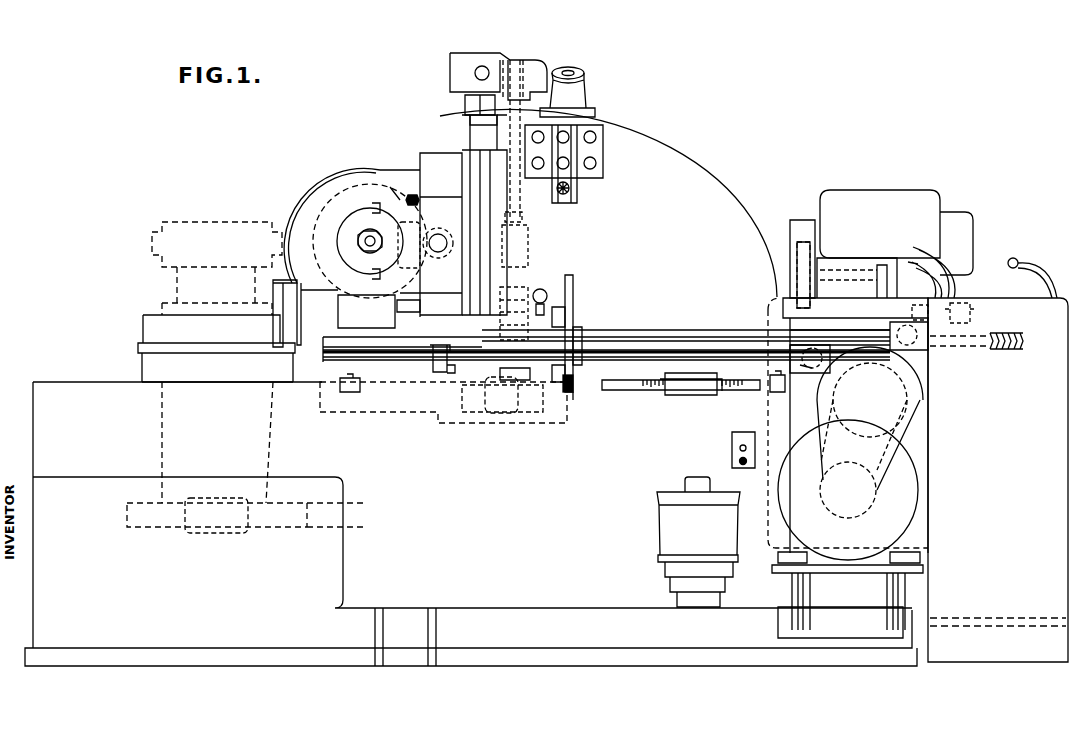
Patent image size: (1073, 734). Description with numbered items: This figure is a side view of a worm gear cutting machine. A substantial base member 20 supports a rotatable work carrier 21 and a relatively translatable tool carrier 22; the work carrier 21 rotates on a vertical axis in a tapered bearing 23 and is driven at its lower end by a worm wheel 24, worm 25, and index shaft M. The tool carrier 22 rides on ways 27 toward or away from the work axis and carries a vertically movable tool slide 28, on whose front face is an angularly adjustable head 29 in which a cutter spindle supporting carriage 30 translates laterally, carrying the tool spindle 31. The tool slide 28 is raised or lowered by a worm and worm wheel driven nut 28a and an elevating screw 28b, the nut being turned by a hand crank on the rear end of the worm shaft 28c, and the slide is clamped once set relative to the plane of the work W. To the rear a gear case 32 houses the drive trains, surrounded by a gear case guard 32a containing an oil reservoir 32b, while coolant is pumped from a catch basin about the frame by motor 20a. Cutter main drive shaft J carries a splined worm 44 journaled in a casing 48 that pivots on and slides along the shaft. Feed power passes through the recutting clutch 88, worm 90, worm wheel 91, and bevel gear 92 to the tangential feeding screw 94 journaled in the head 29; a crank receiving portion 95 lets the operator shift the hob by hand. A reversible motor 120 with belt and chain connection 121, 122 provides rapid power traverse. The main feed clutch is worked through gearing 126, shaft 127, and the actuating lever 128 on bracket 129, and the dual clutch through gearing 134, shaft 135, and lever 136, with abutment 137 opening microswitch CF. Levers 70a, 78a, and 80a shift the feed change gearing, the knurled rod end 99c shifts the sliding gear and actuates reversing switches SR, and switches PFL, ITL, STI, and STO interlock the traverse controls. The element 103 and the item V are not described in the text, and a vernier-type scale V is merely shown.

The base member 20 is at (471, 524).
The motor 20a is at (698, 542).
The work carrier 21 is at (143, 327).
The tool carrier 22 is at (608, 203).
The tapered bearing 23 is at (163, 424).
The worm wheel 24 is at (127, 519).
The worm 25 is at (221, 533).
The ways 27 is at (428, 337).
The tool slide 28 is at (462, 152).
The elevating nut 28a is at (465, 104).
The elevating screw 28b is at (468, 122).
The worm shaft 28c is at (482, 66).
The angularly adjustable head 29 is at (422, 160).
The cutter spindle supporting carriage 30 is at (406, 196).
The tool spindle 31 is at (357, 241).
The gear case 32 is at (790, 422).
The gear case guard 32a is at (998, 480).
The oil reservoir 32b is at (1020, 618).
The worm 44 is at (497, 418).
The casing 48 is at (452, 420).
The lever 70a is at (915, 247).
The balled lever 78a is at (1013, 258).
The lever 80a is at (910, 262).
The recutting clutch 88 is at (528, 293).
The worm 90 is at (528, 240).
The worm wheel 91 is at (522, 217).
The bevel gear 92 is at (439, 233).
The tangential feeding screw 94 is at (437, 252).
The crank receiving portion 95 is at (520, 60).
The knurled outer end of shifting rod 99c is at (1007, 350).
The knob 103 is at (585, 70).
The reversible motor 120 is at (896, 232).
The belt connection 121 is at (790, 245).
The chain connection 122 is at (878, 302).
The gearing 126 is at (928, 346).
The second shaft 127 is at (643, 330).
The actuating lever 128 is at (574, 283).
The bracket 129 is at (582, 330).
The gearing 134 is at (808, 373).
The shaft 135 is at (692, 350).
The lever 136 is at (573, 395).
The abutment 137 is at (448, 373).
The microswitch CF is at (515, 380).
The selector switch ITL is at (575, 388).
The cutter main drive shaft J is at (392, 412).
The index shaft M is at (363, 505).
The switch PFL is at (574, 312).
The reversing switches SR is at (954, 313).
The stanchion traverse limit switch STI is at (368, 390).
The stanchion traverse limit switch STO is at (770, 388).
The vernier scale V is at (660, 392).
The work W is at (152, 243).